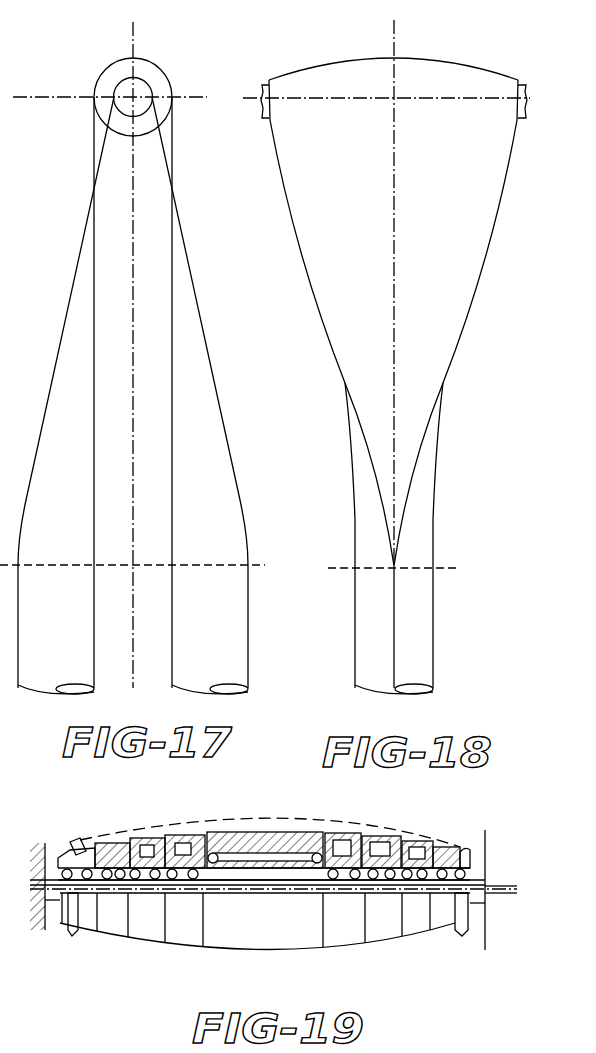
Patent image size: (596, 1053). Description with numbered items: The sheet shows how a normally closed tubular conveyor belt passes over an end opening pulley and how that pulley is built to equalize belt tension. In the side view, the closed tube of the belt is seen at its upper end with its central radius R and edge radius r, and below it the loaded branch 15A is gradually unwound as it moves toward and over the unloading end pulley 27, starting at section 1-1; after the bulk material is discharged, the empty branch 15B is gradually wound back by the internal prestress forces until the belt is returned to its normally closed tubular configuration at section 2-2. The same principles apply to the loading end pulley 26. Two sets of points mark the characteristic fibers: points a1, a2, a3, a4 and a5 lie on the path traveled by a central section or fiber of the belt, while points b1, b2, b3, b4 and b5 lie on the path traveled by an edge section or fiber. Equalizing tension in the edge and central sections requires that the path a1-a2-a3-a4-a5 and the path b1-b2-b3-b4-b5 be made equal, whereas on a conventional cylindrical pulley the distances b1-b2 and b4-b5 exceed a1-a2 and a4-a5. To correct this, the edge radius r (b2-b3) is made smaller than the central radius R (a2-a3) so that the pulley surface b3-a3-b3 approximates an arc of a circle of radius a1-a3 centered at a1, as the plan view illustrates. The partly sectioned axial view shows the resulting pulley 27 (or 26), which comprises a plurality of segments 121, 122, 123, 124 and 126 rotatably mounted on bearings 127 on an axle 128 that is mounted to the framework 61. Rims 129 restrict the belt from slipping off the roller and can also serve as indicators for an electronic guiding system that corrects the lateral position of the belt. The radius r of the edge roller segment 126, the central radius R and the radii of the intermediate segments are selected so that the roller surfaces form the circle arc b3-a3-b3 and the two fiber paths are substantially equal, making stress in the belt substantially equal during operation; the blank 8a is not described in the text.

In FIG. 17, the blank tube 8a is at (125, 133).
In FIG. 17, the central radius R is at (118, 82).
In FIG. 17, the edge radius r is at (140, 88).
In FIG. 17, the central fiber point a1 is at (94, 565).
In FIG. 18, the central fiber point a1 is at (395, 568).
In FIG. 17, the central fiber point a2 is at (93, 98).
In FIG. 18, the central fiber point a2 is at (394, 98).
In FIG. 17, the central fiber point a3 is at (133, 58).
In FIG. 18, the central fiber point a3 is at (394, 58).
In FIG. 17, the central fiber point a4 is at (172, 98).
In FIG. 17, the central fiber point a5 is at (172, 565).
In FIG. 17, the edge fiber point b1 is at (18, 565).
In FIG. 18, the edge fiber point b1 is at (393, 568).
In FIG. 17, the edge fiber point b2 is at (113, 96).
In FIG. 18, the edge fiber point b2 is at (270, 100).
In FIG. 17, the edge fiber point b3 is at (133, 78).
In FIG. 18, the edge fiber point b3 is at (270, 80).
In FIG. 17, the edge fiber point b4 is at (153, 97).
In FIG. 17, the edge fiber point b5 is at (248, 565).
In FIG. 17, the section 1- 1 is at (108, 582).
In FIG. 17, the section 2- 2 is at (94, 493).
In FIG. 17, the loaded branch 15A is at (45, 680).
In FIG. 17, the empty branch 15B is at (185, 677).
In FIG. 18, the empty branch 15B is at (394, 376).
In FIG. 19, the loading end pulley 26 is at (283, 834).
In FIG. 19, the unloading end pulley 27 is at (283, 834).
In FIG. 19, the framework 61 is at (487, 930).
In FIG. 19, the roller segment 121 is at (242, 832).
In FIG. 19, the roller segment 122 is at (340, 834).
In FIG. 19, the roller segment 123 is at (380, 840).
In FIG. 19, the roller segment 124 is at (412, 845).
In FIG. 19, the edge roller segment 126 is at (446, 856).
In FIG. 19, the bearings 127 is at (355, 886).
In FIG. 19, the axle 128 is at (470, 920).
In FIG. 19, the rims 129 is at (464, 851).